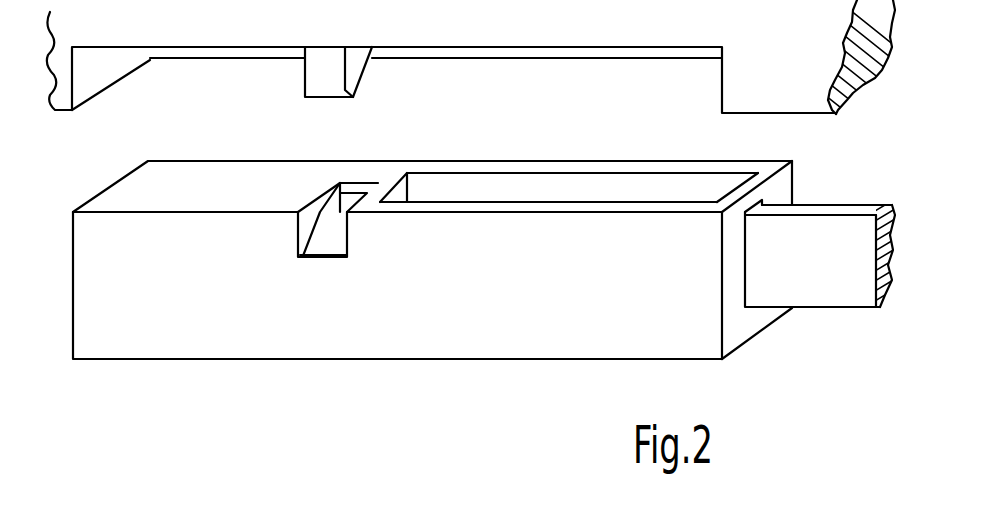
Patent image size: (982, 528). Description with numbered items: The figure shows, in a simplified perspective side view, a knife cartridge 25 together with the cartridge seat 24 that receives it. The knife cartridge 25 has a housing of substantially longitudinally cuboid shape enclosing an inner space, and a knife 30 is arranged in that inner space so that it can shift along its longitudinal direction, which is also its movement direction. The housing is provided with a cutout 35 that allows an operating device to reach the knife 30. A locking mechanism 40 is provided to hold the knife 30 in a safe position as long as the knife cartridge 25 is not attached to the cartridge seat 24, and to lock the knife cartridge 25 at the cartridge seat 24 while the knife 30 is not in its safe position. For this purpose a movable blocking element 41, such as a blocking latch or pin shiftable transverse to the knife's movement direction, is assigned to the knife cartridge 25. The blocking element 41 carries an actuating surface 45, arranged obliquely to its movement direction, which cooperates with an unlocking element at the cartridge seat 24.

The cartridge seat 24 is at (122, 100).
The knife cartridge 25 is at (160, 368).
The knife 30 is at (820, 195).
The cutout 35 is at (552, 202).
The locking mechanism 40 is at (316, 185).
The blocking element 41 is at (352, 182).
The actuating surface 45 is at (325, 232).